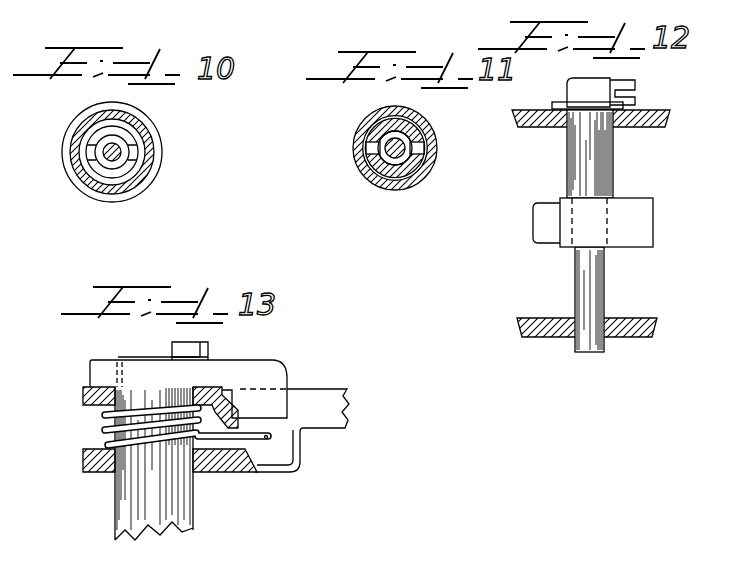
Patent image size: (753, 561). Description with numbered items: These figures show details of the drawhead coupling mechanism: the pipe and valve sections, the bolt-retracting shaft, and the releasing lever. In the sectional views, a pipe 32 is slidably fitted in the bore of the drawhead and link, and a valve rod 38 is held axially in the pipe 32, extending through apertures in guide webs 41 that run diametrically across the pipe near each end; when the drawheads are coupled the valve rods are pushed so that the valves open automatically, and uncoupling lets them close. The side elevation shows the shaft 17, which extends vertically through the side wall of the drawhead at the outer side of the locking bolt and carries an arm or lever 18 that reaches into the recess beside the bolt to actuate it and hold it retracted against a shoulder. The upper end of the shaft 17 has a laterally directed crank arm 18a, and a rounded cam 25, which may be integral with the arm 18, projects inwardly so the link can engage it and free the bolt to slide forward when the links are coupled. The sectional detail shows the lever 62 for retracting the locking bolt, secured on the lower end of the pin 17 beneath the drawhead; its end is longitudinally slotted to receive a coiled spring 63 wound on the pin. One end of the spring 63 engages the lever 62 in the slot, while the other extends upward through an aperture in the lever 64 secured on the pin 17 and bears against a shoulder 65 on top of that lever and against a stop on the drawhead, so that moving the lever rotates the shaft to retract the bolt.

In FIG. 12, the shaft 17 is at (600, 165).
In FIG. 13, the shaft 17 is at (192, 505).
In FIG. 12, the arm or lever 18 is at (548, 230).
In FIG. 12, the crank arm 18a is at (595, 88).
In FIG. 12, the rounded cam 25 is at (636, 225).
In FIG. 10, the pipe 32 is at (152, 158).
In FIG. 10, the valve rod 38 is at (117, 160).
In FIG. 11, the valve rod 38 is at (395, 162).
In FIG. 11, the guide webs 41 is at (413, 158).
In FIG. 13, the lever 62 is at (330, 408).
In FIG. 13, the coiled spring 63 is at (105, 432).
In FIG. 13, the lever 64 is at (278, 371).
In FIG. 13, the shoulder 65 is at (185, 346).